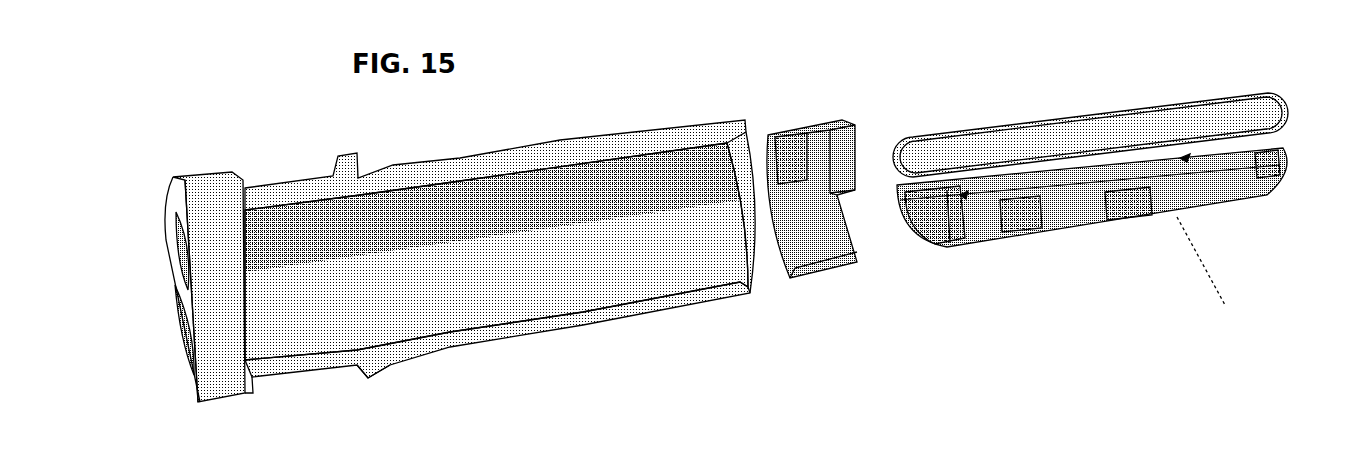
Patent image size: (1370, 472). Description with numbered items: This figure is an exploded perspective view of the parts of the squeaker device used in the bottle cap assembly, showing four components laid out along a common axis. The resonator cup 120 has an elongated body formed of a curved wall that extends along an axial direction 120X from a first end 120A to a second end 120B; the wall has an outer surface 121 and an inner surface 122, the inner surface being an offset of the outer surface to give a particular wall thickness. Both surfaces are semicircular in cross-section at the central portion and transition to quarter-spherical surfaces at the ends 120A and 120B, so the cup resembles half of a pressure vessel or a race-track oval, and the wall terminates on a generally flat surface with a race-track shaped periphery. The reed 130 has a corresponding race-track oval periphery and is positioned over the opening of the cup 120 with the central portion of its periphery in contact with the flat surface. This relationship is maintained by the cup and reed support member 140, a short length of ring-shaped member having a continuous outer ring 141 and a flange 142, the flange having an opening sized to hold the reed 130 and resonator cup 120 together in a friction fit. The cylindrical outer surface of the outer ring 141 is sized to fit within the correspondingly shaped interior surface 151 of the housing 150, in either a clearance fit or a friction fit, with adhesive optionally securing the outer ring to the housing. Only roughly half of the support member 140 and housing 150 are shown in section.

The resonator cup 120 is at (1121, 233).
The first end 120A is at (908, 230).
The second end 120B is at (1292, 162).
The axial direction 120X is at (1110, 218).
The outer surface 121 is at (1015, 235).
The inner surface 122 is at (948, 217).
The reed 130 is at (1062, 110).
The cup and reed support member 140 is at (833, 212).
The outer ring 141 is at (775, 128).
The flange 142 is at (853, 147).
The housing 150 is at (460, 256).
The interior surface 151 is at (560, 188).